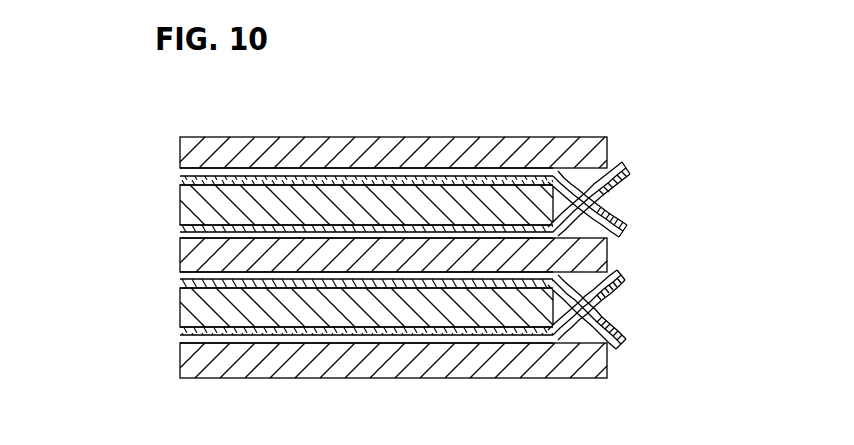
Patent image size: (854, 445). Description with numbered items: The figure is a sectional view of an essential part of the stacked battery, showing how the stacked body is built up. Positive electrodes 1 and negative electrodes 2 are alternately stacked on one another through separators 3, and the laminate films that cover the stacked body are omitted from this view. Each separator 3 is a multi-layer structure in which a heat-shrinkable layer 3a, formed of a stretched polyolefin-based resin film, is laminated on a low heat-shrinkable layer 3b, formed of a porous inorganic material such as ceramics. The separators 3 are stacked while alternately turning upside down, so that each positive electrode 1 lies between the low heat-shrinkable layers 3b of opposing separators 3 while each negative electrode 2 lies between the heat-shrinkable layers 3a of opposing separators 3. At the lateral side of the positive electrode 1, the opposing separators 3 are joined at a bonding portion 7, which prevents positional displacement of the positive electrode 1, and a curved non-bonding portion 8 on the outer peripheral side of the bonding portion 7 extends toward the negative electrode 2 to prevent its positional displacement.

The positive electrode 1 is at (182, 210).
The negative electrode 2 is at (180, 140).
The separator 3 is at (459, 239).
The heat-shrinkable layer 3a is at (622, 160).
The low heat-shrinkable layer 3b is at (627, 168).
The bonding portion 7 is at (586, 166).
The non-bonding portion 8 is at (637, 137).